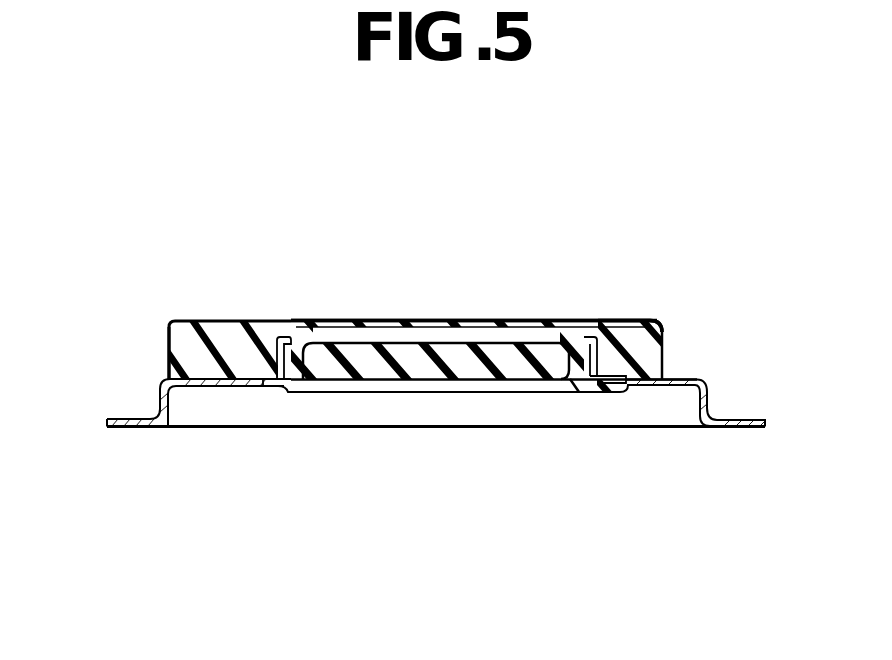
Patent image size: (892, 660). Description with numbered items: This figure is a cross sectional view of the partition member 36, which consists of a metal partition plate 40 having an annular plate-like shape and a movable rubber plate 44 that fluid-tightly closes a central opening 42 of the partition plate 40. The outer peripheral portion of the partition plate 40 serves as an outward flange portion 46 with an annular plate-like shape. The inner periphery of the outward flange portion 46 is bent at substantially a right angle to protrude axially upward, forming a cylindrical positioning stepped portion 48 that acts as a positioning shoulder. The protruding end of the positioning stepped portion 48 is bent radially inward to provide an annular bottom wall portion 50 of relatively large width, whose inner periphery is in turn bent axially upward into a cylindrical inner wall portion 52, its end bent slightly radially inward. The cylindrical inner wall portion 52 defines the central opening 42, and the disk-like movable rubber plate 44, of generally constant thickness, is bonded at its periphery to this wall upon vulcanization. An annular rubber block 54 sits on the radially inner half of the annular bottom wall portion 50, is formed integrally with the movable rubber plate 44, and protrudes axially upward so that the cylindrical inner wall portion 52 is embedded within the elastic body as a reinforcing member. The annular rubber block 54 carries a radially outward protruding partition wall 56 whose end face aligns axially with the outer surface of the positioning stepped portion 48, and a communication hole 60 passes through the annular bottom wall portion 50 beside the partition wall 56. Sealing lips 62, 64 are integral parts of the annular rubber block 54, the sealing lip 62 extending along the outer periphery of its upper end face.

The partition member 36 is at (518, 220).
The partition plate 40 is at (615, 320).
The central opening 42 is at (297, 342).
The movable rubber plate 44 is at (521, 336).
The outward flange portion 46 is at (118, 421).
The positioning stepped portion 48 is at (160, 408).
The annular bottom wall portion 50 is at (708, 388).
The cylindrical inner wall portion 52 is at (262, 353).
The annular rubber block 54 is at (678, 330).
The partition wall 56 is at (185, 343).
The communication hole 60 is at (687, 376).
The sealing lip 62 is at (634, 319).
The sealing lip 64 is at (172, 321).